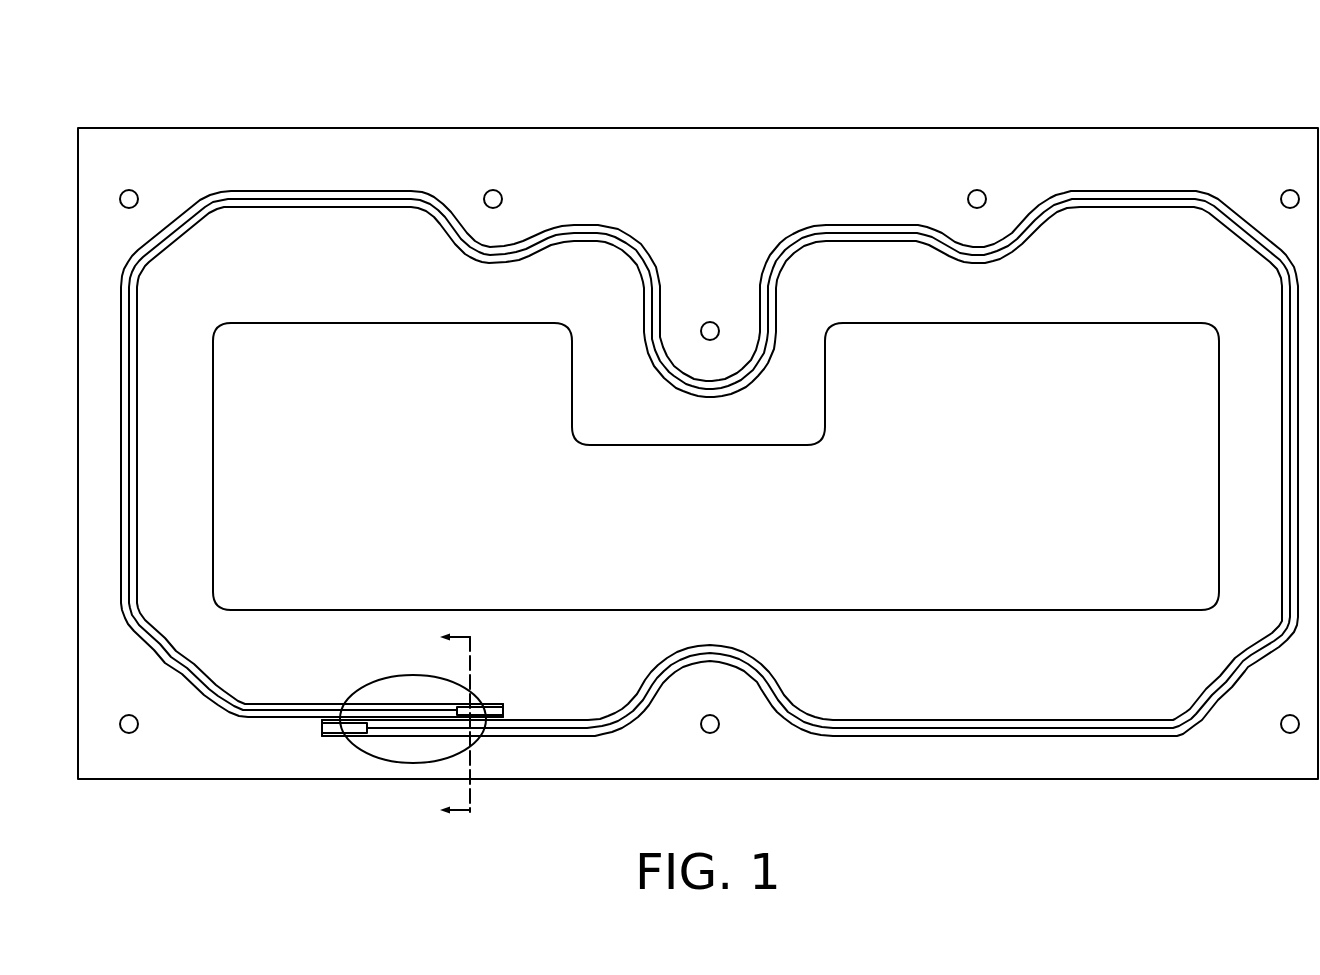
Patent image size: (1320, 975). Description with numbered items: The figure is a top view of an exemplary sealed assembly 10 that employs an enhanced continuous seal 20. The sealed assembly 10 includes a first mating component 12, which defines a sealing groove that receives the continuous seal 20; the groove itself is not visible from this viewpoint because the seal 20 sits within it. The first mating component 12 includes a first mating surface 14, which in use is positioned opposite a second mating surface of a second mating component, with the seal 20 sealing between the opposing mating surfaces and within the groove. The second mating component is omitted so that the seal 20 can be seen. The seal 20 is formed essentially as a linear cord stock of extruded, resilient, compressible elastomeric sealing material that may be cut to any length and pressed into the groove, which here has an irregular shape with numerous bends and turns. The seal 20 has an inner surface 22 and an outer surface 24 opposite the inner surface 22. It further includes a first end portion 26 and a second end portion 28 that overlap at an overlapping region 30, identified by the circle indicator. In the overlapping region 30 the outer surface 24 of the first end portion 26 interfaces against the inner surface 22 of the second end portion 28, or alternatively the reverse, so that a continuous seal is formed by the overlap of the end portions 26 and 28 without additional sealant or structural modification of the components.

The sealed assembly 10 is at (1013, 95).
The first mating component 12 is at (1222, 127).
The first mating surface 14 is at (710, 190).
The continuous seal 20 is at (987, 747).
The inner surface 22 is at (228, 697).
The outer surface 24 is at (218, 712).
The first end portion 26 is at (415, 703).
The second end portion 28 is at (412, 738).
The overlapping region 30 is at (387, 679).